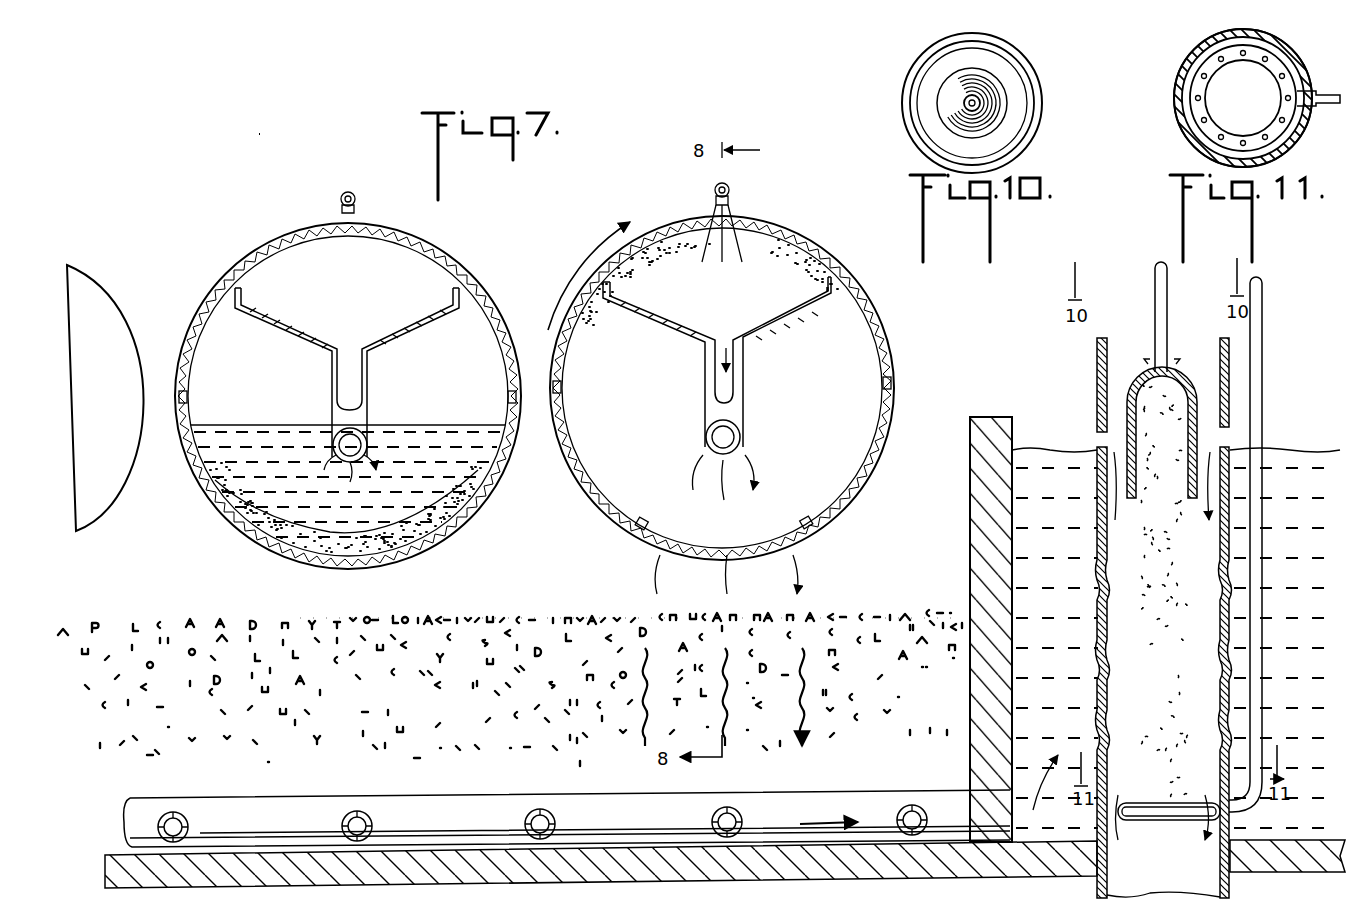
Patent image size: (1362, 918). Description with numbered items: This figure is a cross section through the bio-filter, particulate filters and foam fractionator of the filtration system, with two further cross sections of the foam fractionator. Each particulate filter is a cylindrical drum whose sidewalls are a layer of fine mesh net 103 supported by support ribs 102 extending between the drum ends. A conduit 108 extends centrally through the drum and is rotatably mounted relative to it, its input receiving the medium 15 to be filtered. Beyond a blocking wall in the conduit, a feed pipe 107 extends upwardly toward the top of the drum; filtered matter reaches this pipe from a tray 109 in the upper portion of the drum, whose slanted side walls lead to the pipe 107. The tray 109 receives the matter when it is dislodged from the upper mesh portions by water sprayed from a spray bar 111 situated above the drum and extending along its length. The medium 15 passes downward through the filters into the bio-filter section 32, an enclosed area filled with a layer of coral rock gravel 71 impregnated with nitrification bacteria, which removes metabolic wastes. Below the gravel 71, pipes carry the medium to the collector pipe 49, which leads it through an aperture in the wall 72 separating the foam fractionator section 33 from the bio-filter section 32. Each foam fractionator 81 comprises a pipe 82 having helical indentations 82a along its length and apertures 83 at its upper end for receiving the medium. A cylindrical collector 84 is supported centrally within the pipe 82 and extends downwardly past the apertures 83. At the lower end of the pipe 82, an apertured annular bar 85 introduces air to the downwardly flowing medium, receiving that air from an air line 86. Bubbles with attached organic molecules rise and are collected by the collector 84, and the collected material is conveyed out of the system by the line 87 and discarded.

In FIG. 7, the medium 15 is at (480, 497).
In FIG. 7, the bio-filter section 32 is at (877, 600).
In FIG. 7, the foam fractionator section 33 is at (1045, 438).
In FIG. 7, the collector pipe 49 is at (862, 797).
In FIG. 7, the coral rock gravel 71 is at (542, 626).
In FIG. 7, the wall 72 is at (970, 693).
In FIG. 7, the foam fractionator 81 is at (1182, 296).
In FIG. 7, the pipe 82 is at (1229, 490).
In FIG. 10, the pipe 82 is at (1040, 90).
In FIG. 7, the helical indentations 82a is at (1229, 595).
In FIG. 7, the apertures 83 is at (1229, 430).
In FIG. 7, the collector 84 is at (1134, 380).
In FIG. 10, the collector 84 is at (988, 80).
In FIG. 7, the apertured annular bar 85 is at (1163, 822).
In FIG. 11, the apertured annular bar 85 is at (1212, 67).
In FIG. 7, the air line 86 is at (1262, 642).
In FIG. 7, the line 87 is at (1154, 283).
In FIG. 7, the support ribs 102 is at (513, 413).
In FIG. 7, the fine mesh net 103 is at (477, 282).
In FIG. 7, the feed pipe 107 is at (740, 357).
In FIG. 7, the conduit 108 is at (362, 398).
In FIG. 7, the tray 109 is at (803, 308).
In FIG. 7, the spray bar 111 is at (735, 193).